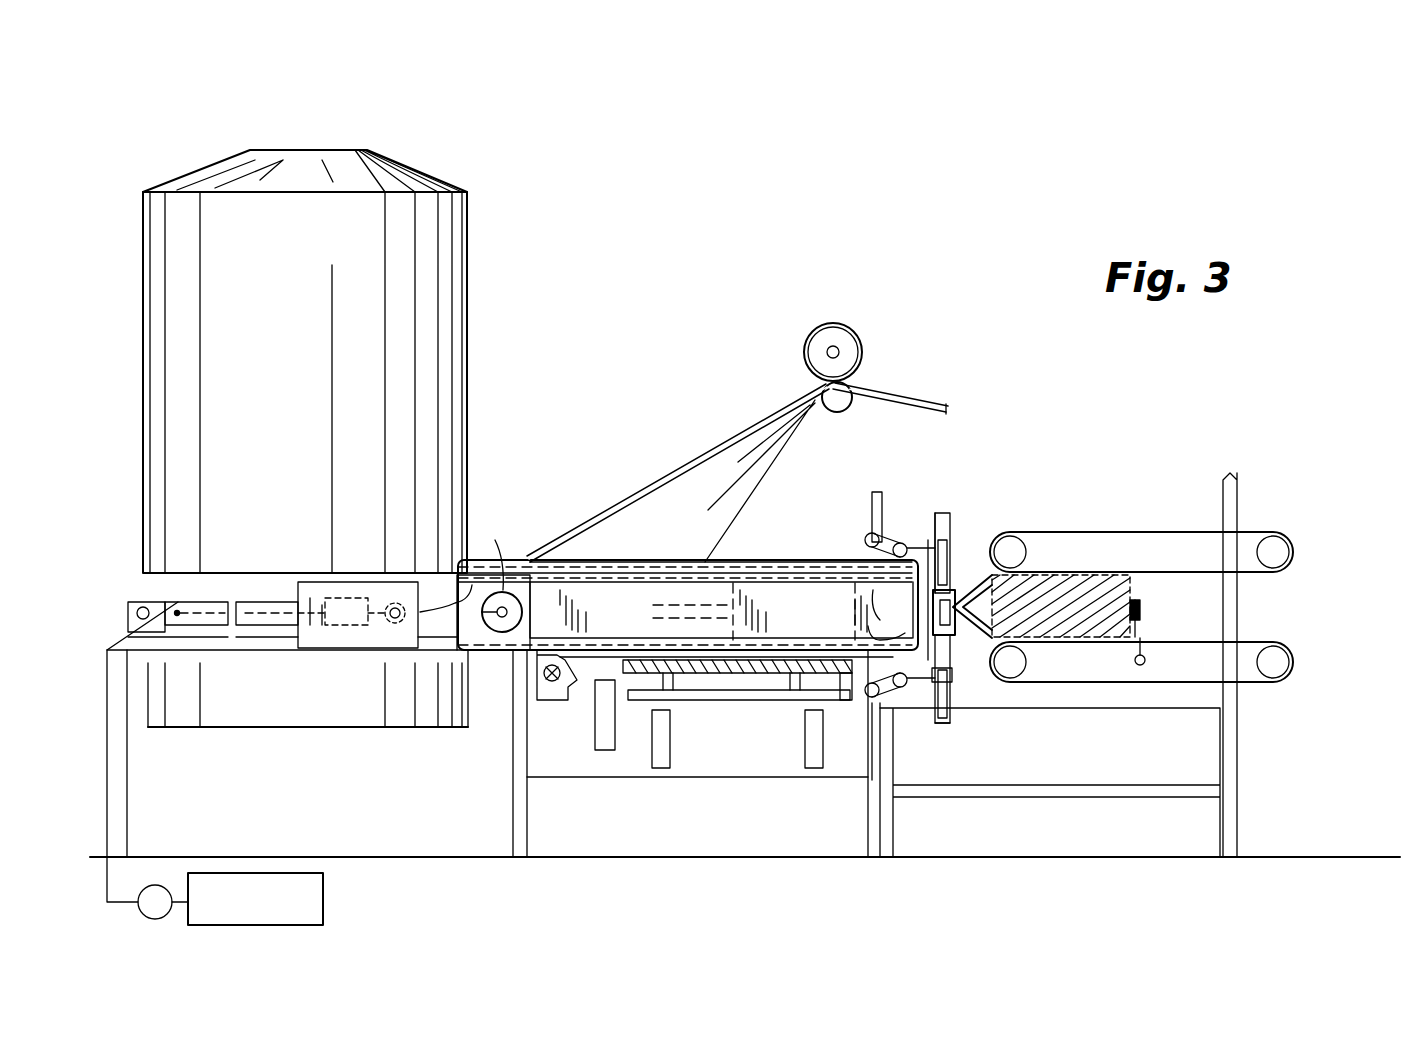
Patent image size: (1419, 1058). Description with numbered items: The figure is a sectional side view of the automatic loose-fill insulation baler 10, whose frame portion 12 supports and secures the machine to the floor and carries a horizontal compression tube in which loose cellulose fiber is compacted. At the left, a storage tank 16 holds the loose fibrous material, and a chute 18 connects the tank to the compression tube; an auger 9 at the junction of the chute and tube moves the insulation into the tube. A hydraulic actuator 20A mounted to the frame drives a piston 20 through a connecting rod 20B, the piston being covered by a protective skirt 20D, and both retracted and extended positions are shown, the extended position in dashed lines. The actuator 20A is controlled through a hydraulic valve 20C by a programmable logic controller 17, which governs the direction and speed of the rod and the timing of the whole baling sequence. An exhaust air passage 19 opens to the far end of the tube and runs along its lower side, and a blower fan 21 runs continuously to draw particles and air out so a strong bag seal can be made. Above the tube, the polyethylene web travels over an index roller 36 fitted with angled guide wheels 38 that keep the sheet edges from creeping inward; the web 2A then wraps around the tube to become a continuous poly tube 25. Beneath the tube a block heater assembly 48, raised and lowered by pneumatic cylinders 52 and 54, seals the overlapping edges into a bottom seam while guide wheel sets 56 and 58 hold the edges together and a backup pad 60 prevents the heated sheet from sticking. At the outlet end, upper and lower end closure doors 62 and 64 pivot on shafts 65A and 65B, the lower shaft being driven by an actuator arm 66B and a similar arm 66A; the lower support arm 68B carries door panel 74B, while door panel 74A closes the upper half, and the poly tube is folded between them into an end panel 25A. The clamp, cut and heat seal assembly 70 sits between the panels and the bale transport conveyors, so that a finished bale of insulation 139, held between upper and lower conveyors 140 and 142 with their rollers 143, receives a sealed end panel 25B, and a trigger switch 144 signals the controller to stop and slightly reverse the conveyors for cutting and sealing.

The automatic loose-fill insulation baler 10 is at (796, 874).
The frame portion 12 is at (527, 836).
The storage tank 16 is at (470, 282).
The programmable logic controller 17 is at (240, 928).
The chute 18 is at (498, 652).
The exhaust air passage 19 is at (620, 645).
The piston 20 is at (478, 578).
The hydraulic actuator 20A is at (175, 600).
The connecting rod 20B is at (370, 600).
The hydraulic valve 20C is at (152, 920).
The protective skirt 20D is at (308, 590).
The blower fan 21 is at (535, 690).
The poly tube 25 is at (738, 562).
The end panel 25A is at (898, 637).
The end panel 25B is at (1015, 612).
The film web 2A is at (935, 404).
The index roller 36 is at (838, 412).
The guide wheels 38 is at (848, 326).
The block heater assembly 48 is at (773, 705).
The pneumatic cylinder 52 is at (668, 770).
The pneumatic cylinder 54 is at (812, 770).
The guide wheel set 56 is at (680, 680).
The guide wheel set 58 is at (835, 700).
The backup pad 60 is at (740, 675).
The upper bale tube end closure door 62 is at (918, 538).
The lower bale tube end closure door 64 is at (948, 720).
The shaft 65A is at (896, 520).
The shaft 65B is at (893, 700).
The upper link 66A is at (865, 545).
The actuator arm 66B is at (888, 698).
The lower support arm 68B is at (945, 682).
The clamp, cut, and heat seal assembly 70 is at (958, 578).
The upper door panel 74A is at (955, 545).
The lower door panel 74B is at (945, 652).
The bale of insulation 139 is at (1140, 598).
The upper conveyor 140 is at (1118, 532).
The lower conveyor 142 is at (1072, 685).
The conveyor rollers 143 is at (1010, 552).
The trigger switch 144 is at (1142, 666).
The auger 9 is at (512, 554).